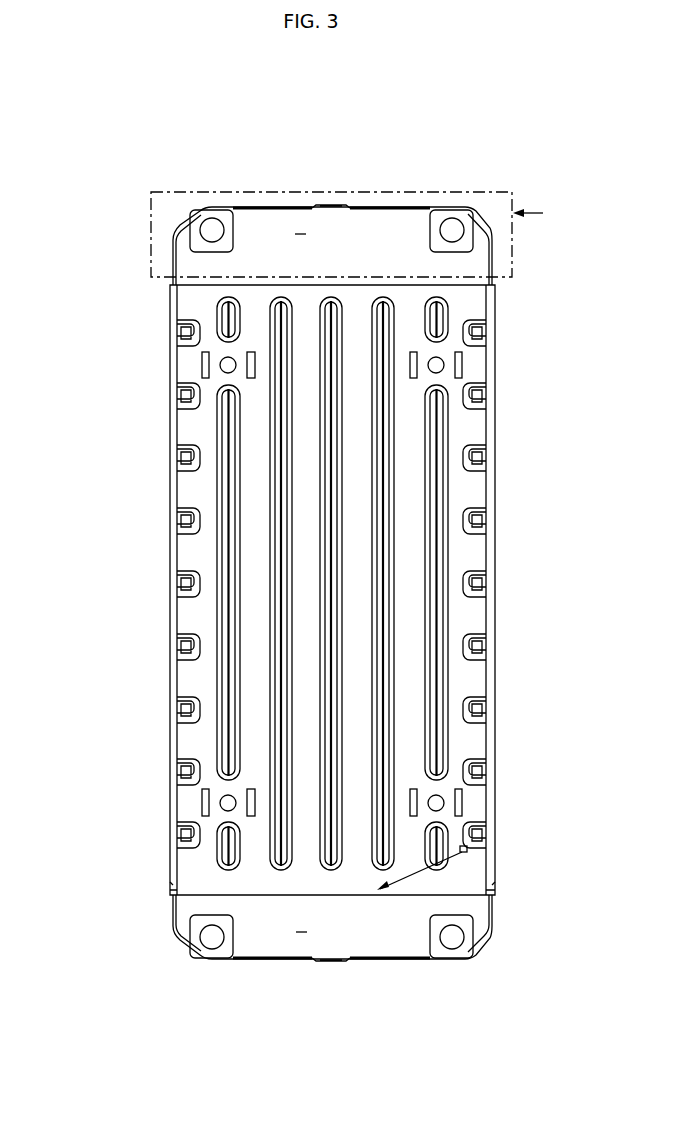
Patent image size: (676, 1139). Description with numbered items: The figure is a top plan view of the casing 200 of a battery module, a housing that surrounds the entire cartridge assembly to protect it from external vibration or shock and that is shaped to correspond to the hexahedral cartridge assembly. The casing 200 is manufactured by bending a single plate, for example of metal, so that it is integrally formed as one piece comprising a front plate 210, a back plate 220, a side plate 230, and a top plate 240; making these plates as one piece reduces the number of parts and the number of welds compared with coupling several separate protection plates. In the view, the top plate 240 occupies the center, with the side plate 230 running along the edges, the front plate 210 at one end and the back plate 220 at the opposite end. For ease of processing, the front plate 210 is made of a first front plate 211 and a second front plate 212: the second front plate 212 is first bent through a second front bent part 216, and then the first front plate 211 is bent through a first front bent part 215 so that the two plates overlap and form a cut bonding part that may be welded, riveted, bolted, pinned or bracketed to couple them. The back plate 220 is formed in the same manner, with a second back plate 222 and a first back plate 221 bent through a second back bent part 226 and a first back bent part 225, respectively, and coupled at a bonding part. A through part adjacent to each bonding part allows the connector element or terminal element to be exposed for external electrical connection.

The casing 200 is at (124, 359).
The front plate 210 is at (265, 119).
The first front plate 211 is at (389, 208).
The second front plate 212 is at (246, 208).
The first front bent part 215 is at (463, 209).
The second front bent part 216 is at (199, 209).
The back plate 220 is at (264, 1044).
The first back plate 221 is at (389, 960).
The second back plate 222 is at (246, 960).
The first back bent part 225 is at (463, 960).
The second back bent part 226 is at (199, 960).
The side plate 230 is at (172, 552).
The top plate 240 is at (418, 495).